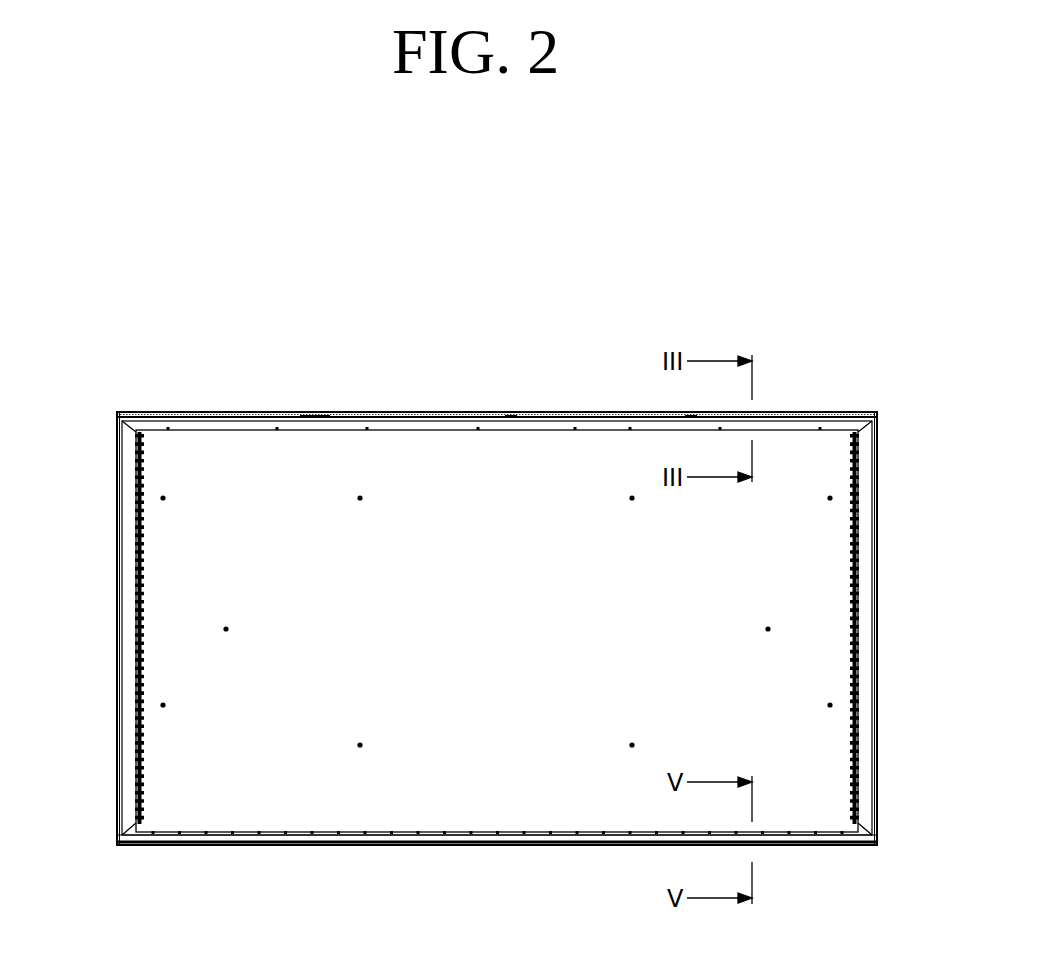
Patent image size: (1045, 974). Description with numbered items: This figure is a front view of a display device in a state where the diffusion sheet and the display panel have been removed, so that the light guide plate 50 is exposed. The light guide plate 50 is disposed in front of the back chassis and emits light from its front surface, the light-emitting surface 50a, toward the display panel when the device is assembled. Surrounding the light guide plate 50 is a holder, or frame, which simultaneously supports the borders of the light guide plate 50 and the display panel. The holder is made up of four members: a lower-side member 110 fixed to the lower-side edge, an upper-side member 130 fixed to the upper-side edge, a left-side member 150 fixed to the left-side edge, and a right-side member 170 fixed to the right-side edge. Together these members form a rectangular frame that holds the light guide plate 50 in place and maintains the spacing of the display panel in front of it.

The light guide plate 50 is at (325, 432).
The light-emitting surface 50a is at (223, 455).
The lower-side member 110 is at (408, 837).
The upper-side member 130 is at (405, 425).
The left-side member 150 is at (132, 567).
The right-side member 170 is at (865, 565).